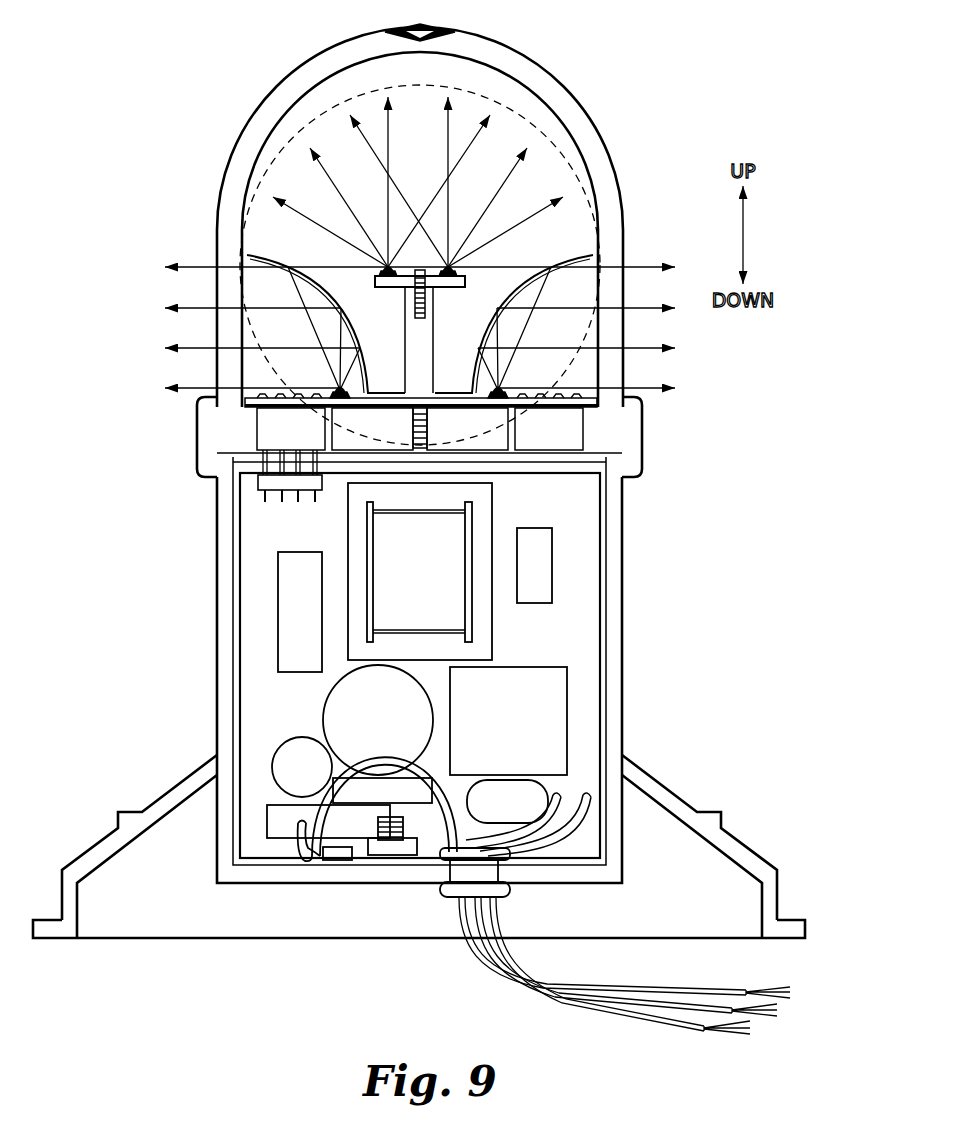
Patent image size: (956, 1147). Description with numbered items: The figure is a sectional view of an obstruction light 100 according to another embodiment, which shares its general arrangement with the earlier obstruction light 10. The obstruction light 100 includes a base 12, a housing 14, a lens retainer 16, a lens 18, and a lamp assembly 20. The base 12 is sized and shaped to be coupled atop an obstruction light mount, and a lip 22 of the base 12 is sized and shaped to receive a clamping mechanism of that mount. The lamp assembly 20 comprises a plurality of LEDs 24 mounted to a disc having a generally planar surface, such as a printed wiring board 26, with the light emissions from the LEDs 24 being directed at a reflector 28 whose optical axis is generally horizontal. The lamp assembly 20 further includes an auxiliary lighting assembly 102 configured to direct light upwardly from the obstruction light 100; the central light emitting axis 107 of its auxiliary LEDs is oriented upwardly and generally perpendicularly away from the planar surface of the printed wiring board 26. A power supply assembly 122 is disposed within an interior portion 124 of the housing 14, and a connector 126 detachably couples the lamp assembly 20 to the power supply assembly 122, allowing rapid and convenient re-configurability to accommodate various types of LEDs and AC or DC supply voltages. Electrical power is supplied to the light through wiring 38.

The obstruction light 100 is at (254, 74).
The lens 18 is at (217, 192).
The obstruction light 10 is at (508, 432).
The lamp assembly 20 is at (302, 234).
The reflector 28 is at (510, 252).
The auxiliary lighting assembly 102 is at (377, 277).
The central light emitting axis 107 is at (448, 157).
The LEDs 24 is at (337, 386).
The printed wiring board 26 is at (550, 402).
The lens retainer 16 is at (645, 448).
The housing 14 is at (217, 600).
The interior portion 124 is at (237, 642).
The connector 126 is at (250, 492).
The power supply assembly 122 is at (588, 641).
The lip 22 is at (719, 812).
The base 12 is at (805, 922).
The wiring 38 is at (609, 1023).